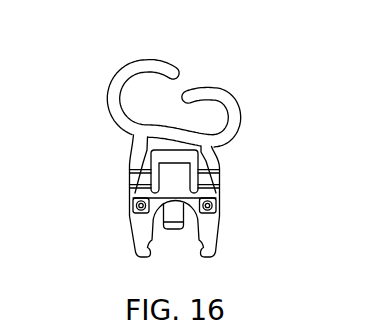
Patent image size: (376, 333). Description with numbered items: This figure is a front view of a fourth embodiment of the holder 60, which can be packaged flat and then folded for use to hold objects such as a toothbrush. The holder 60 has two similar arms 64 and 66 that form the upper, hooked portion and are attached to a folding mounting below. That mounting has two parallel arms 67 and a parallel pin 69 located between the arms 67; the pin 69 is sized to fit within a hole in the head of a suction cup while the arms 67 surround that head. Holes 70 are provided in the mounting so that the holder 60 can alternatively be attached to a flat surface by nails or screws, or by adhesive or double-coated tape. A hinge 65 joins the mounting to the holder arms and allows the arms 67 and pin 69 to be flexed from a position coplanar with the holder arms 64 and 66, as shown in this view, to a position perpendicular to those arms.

The holder 60 is at (222, 60).
The arm 64 is at (238, 111).
The hinge 65 is at (208, 181).
The arm 66 is at (110, 111).
The parallel arm 67 is at (209, 238).
The pin 69 is at (175, 230).
The hole 70 is at (133, 212).